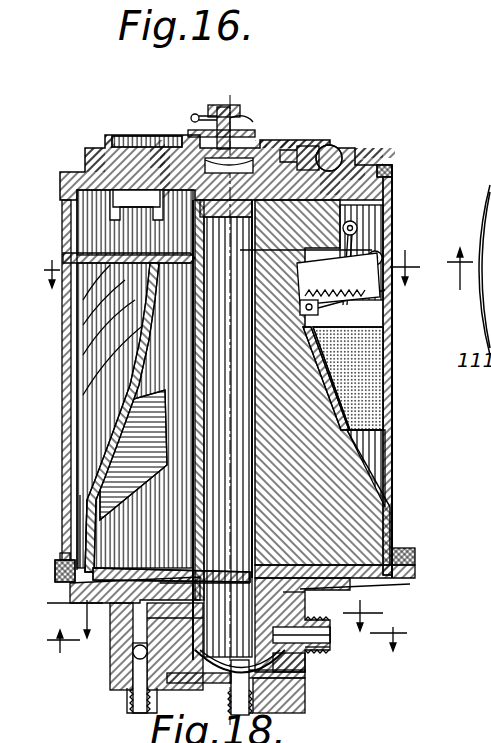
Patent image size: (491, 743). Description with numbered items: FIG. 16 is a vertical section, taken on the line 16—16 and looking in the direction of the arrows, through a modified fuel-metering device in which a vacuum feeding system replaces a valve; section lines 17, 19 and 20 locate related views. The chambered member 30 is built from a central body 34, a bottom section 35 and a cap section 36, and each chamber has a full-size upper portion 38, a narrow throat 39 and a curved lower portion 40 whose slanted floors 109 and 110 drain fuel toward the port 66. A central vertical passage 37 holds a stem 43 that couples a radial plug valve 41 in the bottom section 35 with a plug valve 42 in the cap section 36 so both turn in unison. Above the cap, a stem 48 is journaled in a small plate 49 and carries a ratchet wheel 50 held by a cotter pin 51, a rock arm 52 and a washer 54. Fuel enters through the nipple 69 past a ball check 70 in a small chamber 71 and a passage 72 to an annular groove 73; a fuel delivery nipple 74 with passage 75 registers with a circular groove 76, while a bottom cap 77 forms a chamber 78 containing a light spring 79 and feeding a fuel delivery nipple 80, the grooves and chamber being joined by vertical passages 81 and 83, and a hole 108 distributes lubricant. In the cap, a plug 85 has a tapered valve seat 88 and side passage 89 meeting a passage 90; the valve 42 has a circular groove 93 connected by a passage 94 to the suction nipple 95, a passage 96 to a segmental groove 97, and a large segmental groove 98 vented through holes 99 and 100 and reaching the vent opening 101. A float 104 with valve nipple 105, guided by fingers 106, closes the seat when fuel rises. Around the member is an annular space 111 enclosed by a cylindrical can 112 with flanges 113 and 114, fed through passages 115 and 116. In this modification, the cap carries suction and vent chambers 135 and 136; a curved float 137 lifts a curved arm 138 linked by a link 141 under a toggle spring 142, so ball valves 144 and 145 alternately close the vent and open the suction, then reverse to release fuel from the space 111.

The section line 16— 16 is at (461, 271).
The section line 17— 17 is at (228, 258).
The section line 19— 19 is at (238, 649).
The section line 20— 20 is at (227, 619).
The chambered member 30 is at (70, 428).
The central body 34 is at (112, 420).
The bottom section 35 is at (375, 577).
The cap section 36 is at (63, 234).
The central vertical passage 37 is at (250, 460).
The upper portion of chamber 38 is at (73, 306).
The throat 39 is at (108, 378).
The bottom portion of chamber 40 is at (80, 513).
The radial plug valve 41 is at (200, 678).
The plug valve 42 is at (282, 147).
The stem 43 is at (383, 514).
The stem 48 is at (228, 112).
The small plate 49 is at (173, 150).
The ratchet wheel 50 is at (276, 148).
The cotter pin 51 is at (213, 110).
The rock arm 52 is at (195, 114).
The washer 54 is at (258, 145).
The port 66 is at (190, 573).
The nipple 69 is at (127, 702).
The ball check 70 is at (117, 672).
The small chamber 71 is at (113, 657).
The passage 72 is at (160, 712).
The annular groove 73 is at (292, 593).
The fuel delivery nipple 74 is at (330, 647).
The passage 75 is at (340, 637).
The circular groove 76 is at (330, 650).
The bottom cap 77 is at (278, 683).
The chamber 78 is at (290, 676).
The light spring 79 is at (215, 690).
The fuel delivery nipple 80 is at (247, 703).
The vertical passage 81 is at (105, 603).
The vertical passage 83 is at (292, 660).
The plug 85 is at (108, 148).
The tapered valve seat 88 is at (90, 170).
The side passage 89 is at (118, 135).
The passage 90 is at (157, 140).
The circular groove 93 is at (190, 218).
The passage 94 is at (337, 172).
The suction nipple 95 is at (362, 158).
The passage 96 is at (147, 137).
The segmental groove 97 is at (165, 143).
The segmental groove 98 is at (323, 152).
The hole 99 is at (318, 147).
The hole 100 is at (285, 157).
The vent opening 101 is at (160, 147).
The float 104 is at (113, 198).
The valve nipple 105 is at (100, 196).
The fingers 106 is at (83, 322).
The hole 108 is at (300, 589).
The floor 109 is at (76, 352).
The floor 110 is at (117, 567).
The annular space 111 is at (64, 388).
The cylindrical can 112 is at (397, 467).
The flange 113 is at (413, 560).
The flange 114 is at (389, 178).
The passage 115 is at (66, 583).
The passage 116 is at (80, 527).
The suction chamber 135 is at (380, 150).
The vent chamber 136 is at (390, 200).
The curved float 137 is at (360, 380).
The curved arm 138 is at (333, 337).
The link 141 is at (360, 303).
The spring 142 is at (338, 284).
The ball valve 144 is at (367, 267).
The ball valve 145 is at (390, 165).